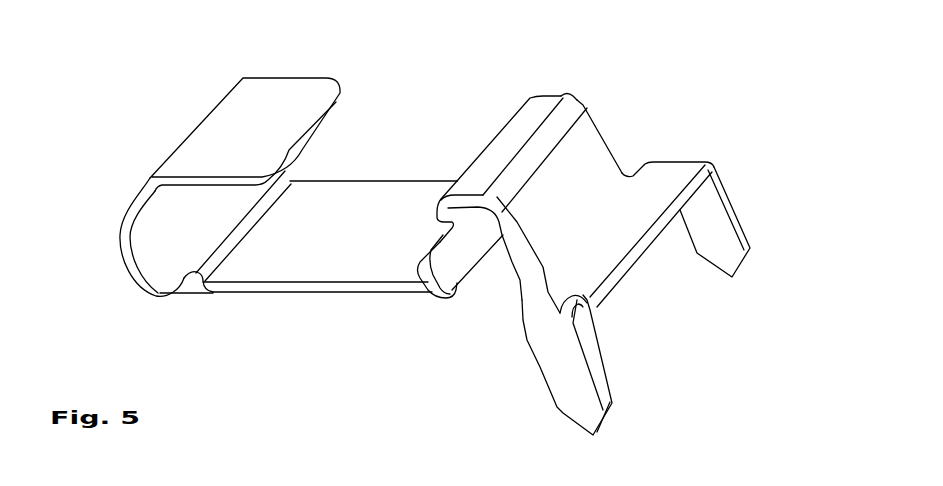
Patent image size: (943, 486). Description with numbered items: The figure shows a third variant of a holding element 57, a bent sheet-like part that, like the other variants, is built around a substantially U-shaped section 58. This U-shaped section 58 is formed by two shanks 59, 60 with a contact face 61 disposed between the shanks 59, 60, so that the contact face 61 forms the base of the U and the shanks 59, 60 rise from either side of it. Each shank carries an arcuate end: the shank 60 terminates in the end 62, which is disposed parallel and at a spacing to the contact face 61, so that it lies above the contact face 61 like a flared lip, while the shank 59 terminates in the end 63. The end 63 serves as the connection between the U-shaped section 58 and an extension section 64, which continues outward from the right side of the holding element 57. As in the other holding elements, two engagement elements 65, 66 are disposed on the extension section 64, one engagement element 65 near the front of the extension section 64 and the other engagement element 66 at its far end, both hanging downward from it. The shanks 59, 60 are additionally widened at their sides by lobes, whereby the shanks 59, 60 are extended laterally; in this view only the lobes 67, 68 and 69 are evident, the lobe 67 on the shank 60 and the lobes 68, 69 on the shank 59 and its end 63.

The holding element 57 is at (454, 104).
The U-shaped section 58 is at (398, 163).
The shank 59 is at (475, 240).
The shank 60 is at (180, 237).
The contact face 61 is at (310, 272).
The end 62 is at (237, 122).
The end 63 is at (565, 120).
The extension section 64 is at (618, 236).
The engagement element 65 is at (577, 417).
The engagement element 66 is at (745, 258).
The lobe 67 is at (130, 273).
The lobe 68 is at (442, 293).
The lobe 69 is at (570, 95).